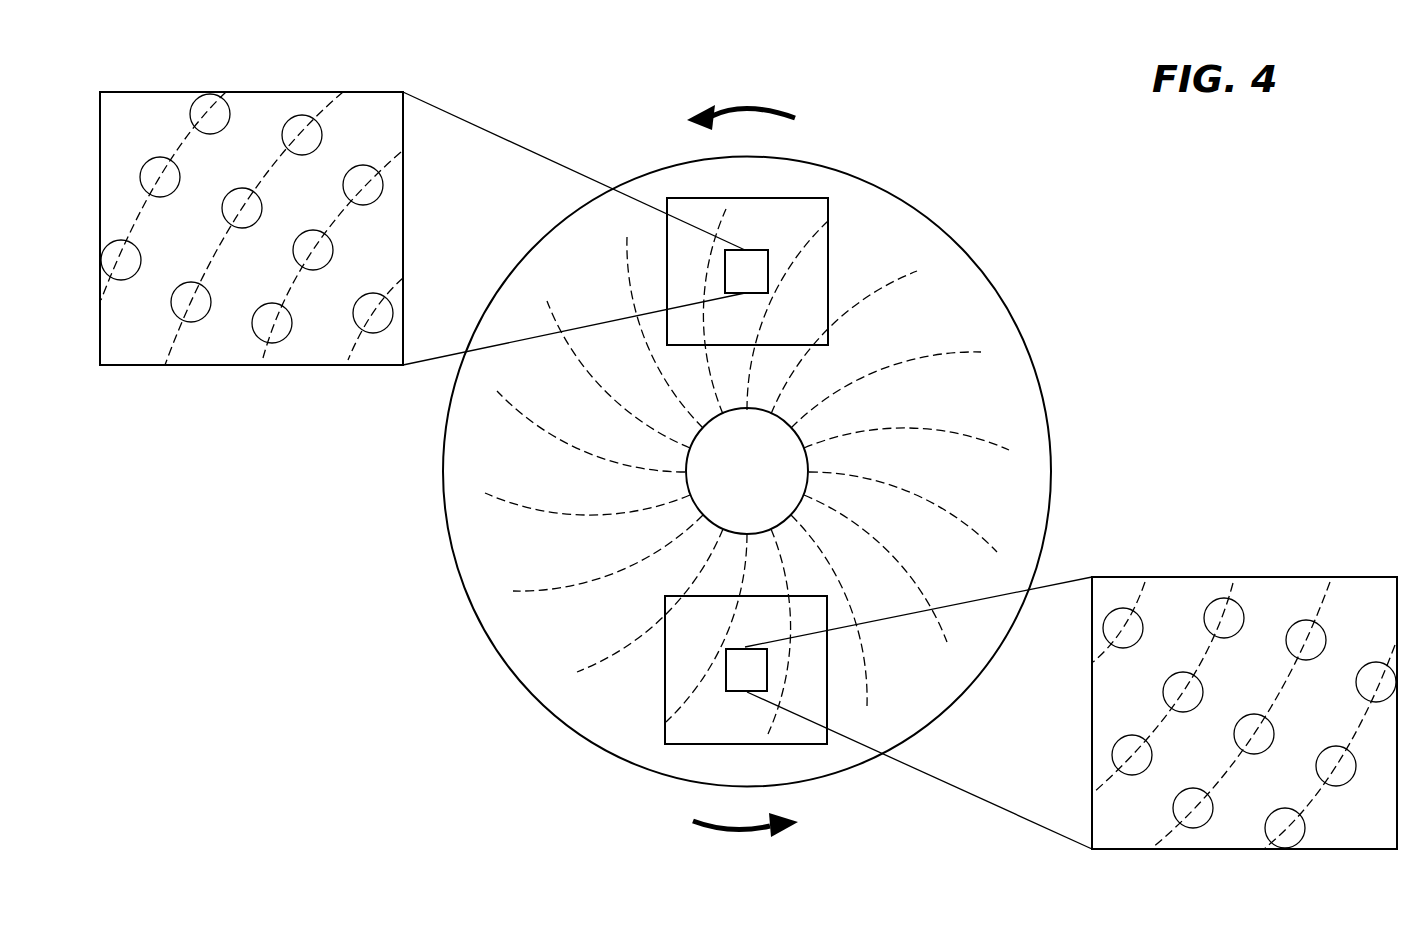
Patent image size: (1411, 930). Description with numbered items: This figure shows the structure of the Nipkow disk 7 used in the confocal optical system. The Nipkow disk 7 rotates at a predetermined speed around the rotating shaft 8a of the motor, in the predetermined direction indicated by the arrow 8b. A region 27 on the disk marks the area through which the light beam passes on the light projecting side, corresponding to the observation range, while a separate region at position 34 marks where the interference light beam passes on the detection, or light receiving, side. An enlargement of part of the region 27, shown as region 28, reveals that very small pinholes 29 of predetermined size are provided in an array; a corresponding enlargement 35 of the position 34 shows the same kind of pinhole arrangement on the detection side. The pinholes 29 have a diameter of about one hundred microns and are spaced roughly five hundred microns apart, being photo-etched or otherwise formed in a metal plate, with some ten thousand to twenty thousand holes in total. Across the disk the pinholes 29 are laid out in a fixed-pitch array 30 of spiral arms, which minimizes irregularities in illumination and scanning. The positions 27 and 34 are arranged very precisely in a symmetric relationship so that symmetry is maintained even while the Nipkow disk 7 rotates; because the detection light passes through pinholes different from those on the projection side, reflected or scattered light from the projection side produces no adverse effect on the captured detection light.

The Nipkow disk 7 is at (1002, 303).
The rotating shaft 8a is at (747, 471).
The arrow 8b is at (741, 471).
The region 27 is at (828, 241).
The region 28 is at (130, 367).
The pinholes 29 is at (190, 323).
The fixed-pitch array of spiral arms 30 is at (543, 595).
The position 34 is at (665, 702).
The enlarged view of second region 35 is at (1193, 577).